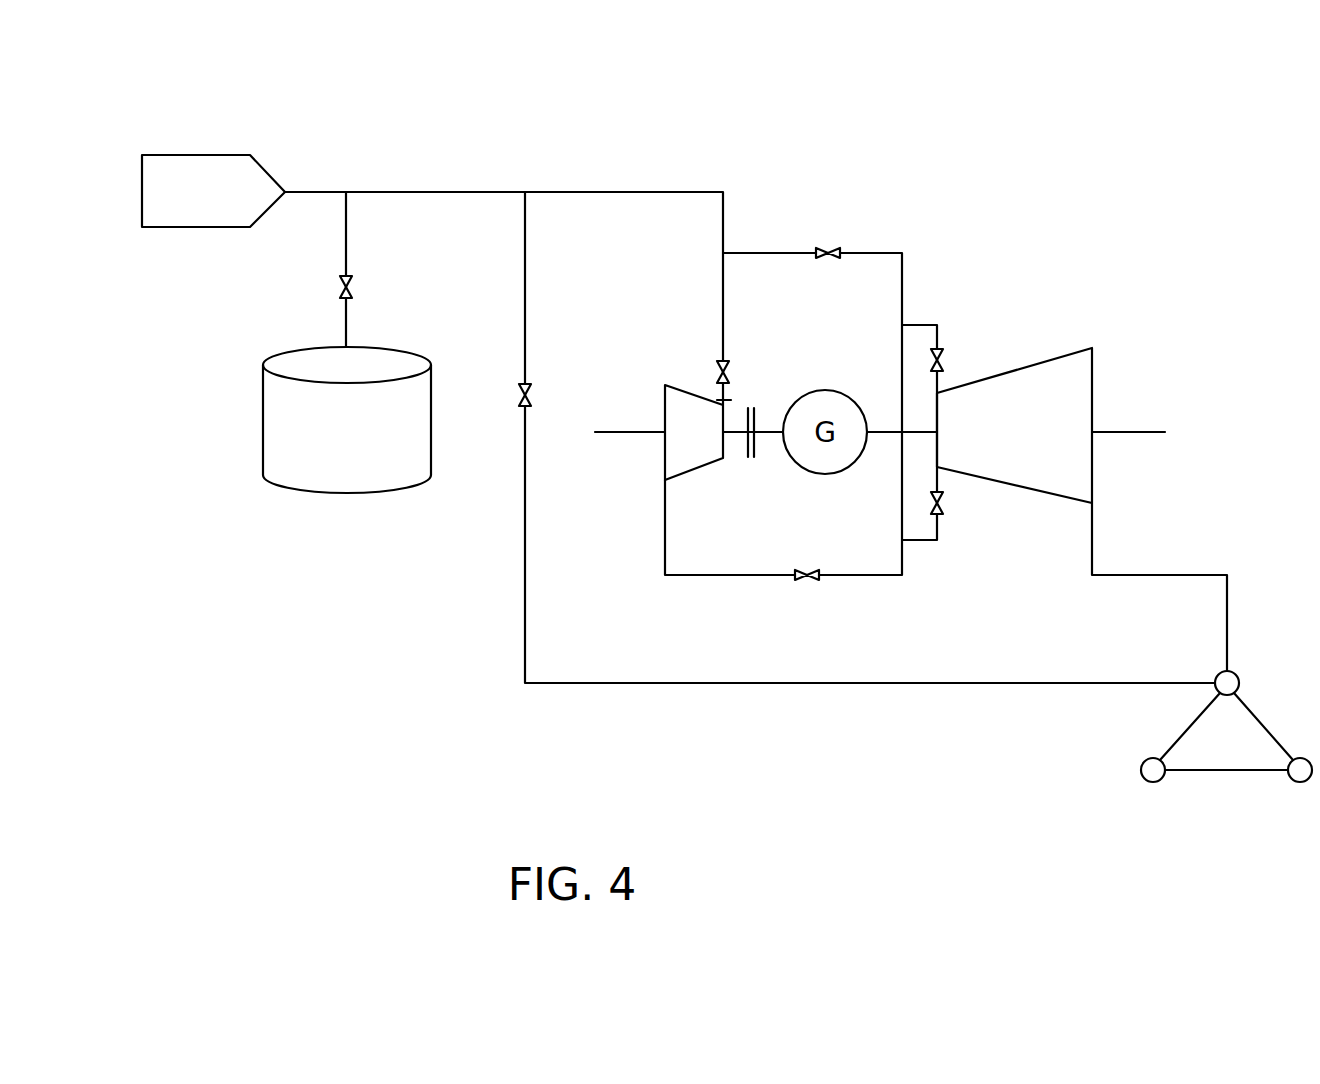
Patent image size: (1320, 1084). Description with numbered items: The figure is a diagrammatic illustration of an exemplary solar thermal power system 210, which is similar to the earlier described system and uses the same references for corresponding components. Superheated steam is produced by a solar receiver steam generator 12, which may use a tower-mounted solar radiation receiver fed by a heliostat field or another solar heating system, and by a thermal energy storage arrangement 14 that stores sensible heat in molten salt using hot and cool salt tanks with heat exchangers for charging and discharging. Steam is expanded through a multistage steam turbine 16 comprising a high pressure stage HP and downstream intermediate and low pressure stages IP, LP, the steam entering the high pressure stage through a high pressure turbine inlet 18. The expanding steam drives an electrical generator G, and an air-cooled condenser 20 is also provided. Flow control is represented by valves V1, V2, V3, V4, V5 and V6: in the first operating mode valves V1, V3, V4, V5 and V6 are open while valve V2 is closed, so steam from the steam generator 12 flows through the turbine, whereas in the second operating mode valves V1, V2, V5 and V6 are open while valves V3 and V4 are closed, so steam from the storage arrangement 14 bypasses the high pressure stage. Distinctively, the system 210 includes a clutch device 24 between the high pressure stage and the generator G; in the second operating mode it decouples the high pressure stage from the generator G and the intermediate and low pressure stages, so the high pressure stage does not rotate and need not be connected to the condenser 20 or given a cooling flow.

The solar receiver steam generator 12 is at (197, 175).
The thermal energy storage arrangement 14 is at (340, 465).
The multistage steam turbine 16 is at (641, 385).
The high pressure turbine inlet 18 is at (730, 401).
The air-cooled condenser 20 is at (1218, 750).
The clutch device 24 is at (752, 467).
The solar thermal power system 210 is at (235, 700).
The valve V1 is at (325, 289).
The valve V2 is at (828, 238).
The valve V3 is at (741, 375).
The valve V4 is at (811, 600).
The valve V5 is at (957, 363).
The valve V6 is at (957, 507).